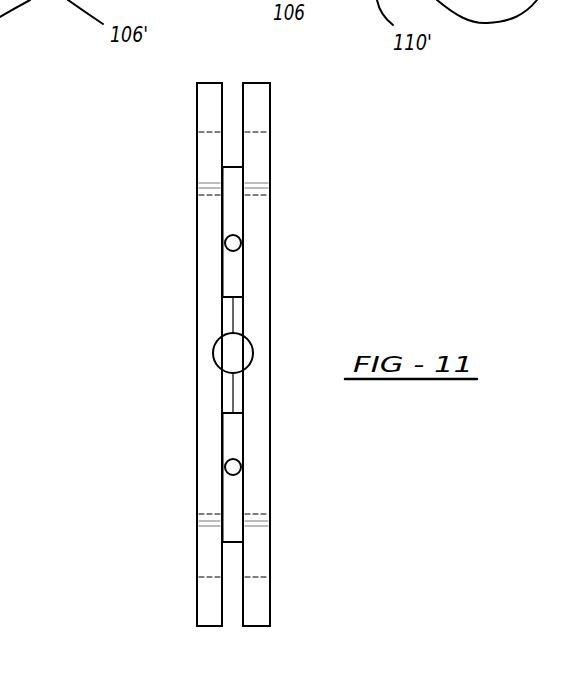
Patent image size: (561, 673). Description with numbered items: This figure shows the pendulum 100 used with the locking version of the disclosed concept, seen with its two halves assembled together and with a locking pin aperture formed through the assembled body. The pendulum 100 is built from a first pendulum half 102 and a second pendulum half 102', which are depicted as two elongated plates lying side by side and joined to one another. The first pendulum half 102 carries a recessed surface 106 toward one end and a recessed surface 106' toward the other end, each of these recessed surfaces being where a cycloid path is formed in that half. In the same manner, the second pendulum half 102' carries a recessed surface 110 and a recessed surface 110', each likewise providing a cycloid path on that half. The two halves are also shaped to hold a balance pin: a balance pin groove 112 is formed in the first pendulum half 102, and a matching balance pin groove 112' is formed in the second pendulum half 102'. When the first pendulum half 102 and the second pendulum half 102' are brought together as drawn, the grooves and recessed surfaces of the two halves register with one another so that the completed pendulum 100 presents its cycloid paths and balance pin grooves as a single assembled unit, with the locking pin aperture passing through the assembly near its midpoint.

The pendulum 100 is at (210, 152).
The first pendulum half 102 is at (149, 354).
The second pendulum half 102' is at (312, 354).
The recessed surface 106 is at (247, 96).
The recessed surface 106' is at (158, 584).
The recessed surface 110 is at (298, 125).
The recessed surface 110' is at (312, 574).
The balance pin groove 112 is at (169, 388).
The balance pin groove 112' is at (158, 342).